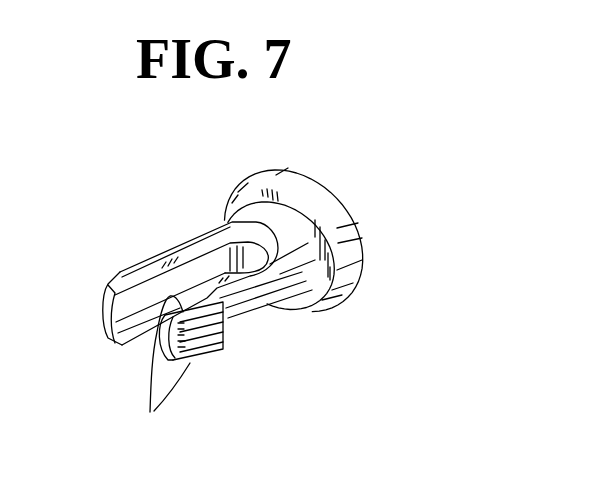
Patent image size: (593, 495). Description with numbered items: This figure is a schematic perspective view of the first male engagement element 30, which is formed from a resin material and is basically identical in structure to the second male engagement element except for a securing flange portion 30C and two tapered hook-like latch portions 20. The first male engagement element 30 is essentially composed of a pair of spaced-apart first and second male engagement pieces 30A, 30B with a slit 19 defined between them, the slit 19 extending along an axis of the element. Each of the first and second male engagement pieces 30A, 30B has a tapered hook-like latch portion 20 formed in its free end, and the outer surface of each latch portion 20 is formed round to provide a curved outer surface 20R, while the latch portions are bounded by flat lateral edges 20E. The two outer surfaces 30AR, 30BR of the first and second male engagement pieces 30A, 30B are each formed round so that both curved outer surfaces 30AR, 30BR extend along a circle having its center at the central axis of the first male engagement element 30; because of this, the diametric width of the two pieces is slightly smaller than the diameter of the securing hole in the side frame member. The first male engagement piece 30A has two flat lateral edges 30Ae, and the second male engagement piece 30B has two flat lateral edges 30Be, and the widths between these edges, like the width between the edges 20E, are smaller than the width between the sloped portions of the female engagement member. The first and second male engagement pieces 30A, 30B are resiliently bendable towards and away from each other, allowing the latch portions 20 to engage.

The slit 19 is at (162, 296).
The tapered hook-like latch portion 20 is at (118, 270).
The flat lateral edge 20E is at (115, 282).
The curved outer surface 20R is at (102, 302).
The first male engagement element 30 is at (216, 218).
The first male engagement piece 30A is at (273, 317).
The curved outer surface of first male engagement piece 30AR is at (280, 317).
The flat lateral edge of first male engagement piece 30Ae is at (262, 303).
The second male engagement piece 30B is at (152, 265).
The curved outer surface of second male engagement piece 30BR is at (190, 250).
The flat lateral edge of second male engagement piece 30Be is at (180, 257).
The securing flange portion 30C is at (313, 186).